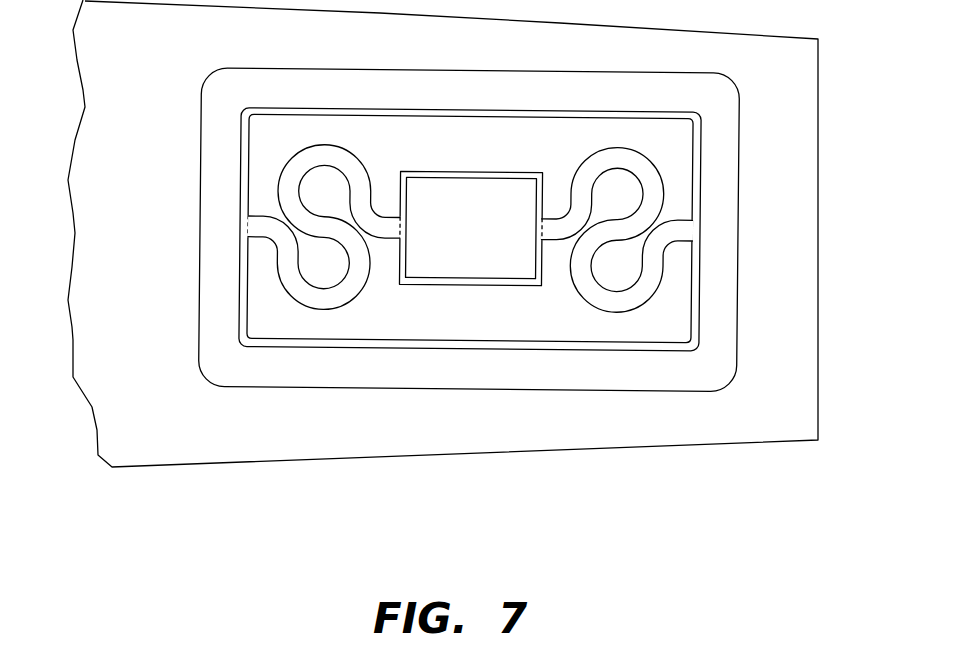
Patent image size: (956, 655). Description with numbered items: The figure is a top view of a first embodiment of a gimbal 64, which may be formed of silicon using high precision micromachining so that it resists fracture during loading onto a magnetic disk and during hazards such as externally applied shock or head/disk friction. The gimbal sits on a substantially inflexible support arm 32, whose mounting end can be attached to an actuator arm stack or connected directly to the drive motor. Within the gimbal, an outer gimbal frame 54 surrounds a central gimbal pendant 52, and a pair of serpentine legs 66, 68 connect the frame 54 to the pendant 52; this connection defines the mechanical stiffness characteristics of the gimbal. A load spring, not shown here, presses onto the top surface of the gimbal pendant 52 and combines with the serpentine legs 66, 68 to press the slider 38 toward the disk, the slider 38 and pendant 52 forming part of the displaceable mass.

The support arm 32 is at (122, 388).
The slider 38 is at (480, 283).
The gimbal pendant 52 is at (447, 245).
The gimbal frame 54 is at (662, 372).
The gimbal 64 is at (297, 422).
The serpentine leg 66 is at (680, 232).
The serpentine leg 68 is at (257, 228).